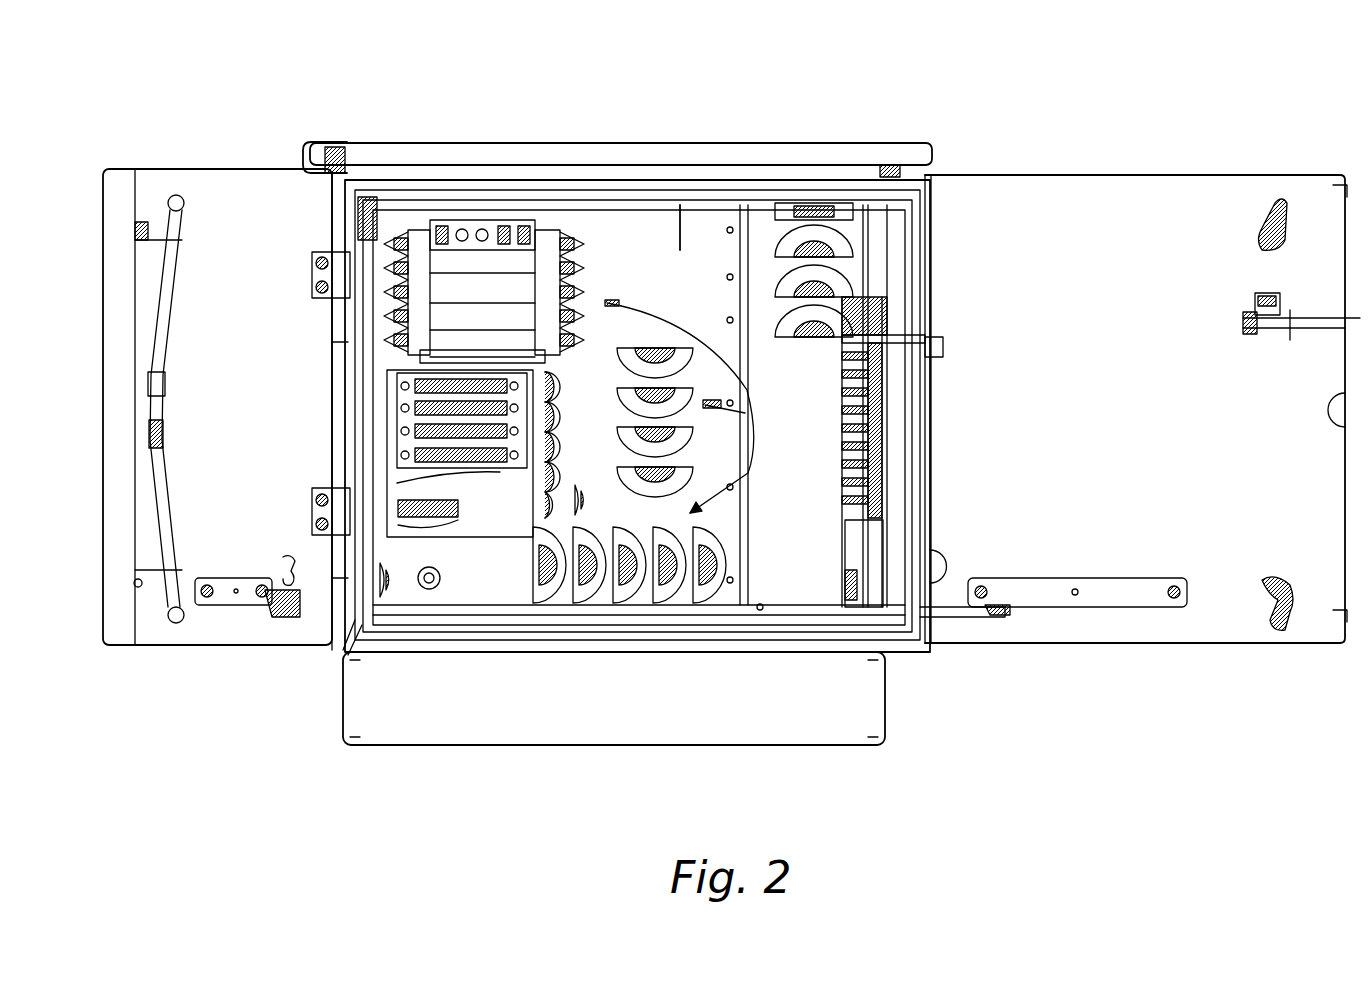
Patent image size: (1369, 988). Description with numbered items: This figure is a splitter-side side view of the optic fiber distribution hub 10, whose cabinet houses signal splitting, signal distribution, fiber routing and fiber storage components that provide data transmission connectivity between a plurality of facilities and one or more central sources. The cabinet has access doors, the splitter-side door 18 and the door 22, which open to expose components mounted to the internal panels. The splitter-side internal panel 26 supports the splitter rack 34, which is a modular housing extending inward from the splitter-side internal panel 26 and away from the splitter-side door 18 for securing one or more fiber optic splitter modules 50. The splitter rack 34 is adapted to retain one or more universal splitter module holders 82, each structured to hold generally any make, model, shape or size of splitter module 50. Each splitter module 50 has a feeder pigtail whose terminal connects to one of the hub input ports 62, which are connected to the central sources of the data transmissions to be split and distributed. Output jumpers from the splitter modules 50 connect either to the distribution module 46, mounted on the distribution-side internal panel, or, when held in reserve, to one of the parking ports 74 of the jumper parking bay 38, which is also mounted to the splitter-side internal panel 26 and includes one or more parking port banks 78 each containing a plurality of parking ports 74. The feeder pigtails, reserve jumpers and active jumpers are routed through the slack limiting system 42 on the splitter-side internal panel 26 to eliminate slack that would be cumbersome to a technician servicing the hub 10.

The optic fiber distribution hub 10 is at (862, 100).
The splitter-side door 18 is at (177, 640).
The door 22 is at (1203, 623).
The splitter-side internal panel 26 is at (600, 270).
The splitter rack 34 is at (477, 207).
The jumper parking bay 38 is at (485, 483).
The slack limiting system 42 is at (330, 250).
The distribution module 46 is at (907, 423).
The splitter module 50 is at (512, 197).
The hub input port 62 is at (345, 510).
The parking port 74 is at (400, 505).
The parking port bank 78 is at (400, 430).
The universal splitter module holder 82 is at (593, 330).